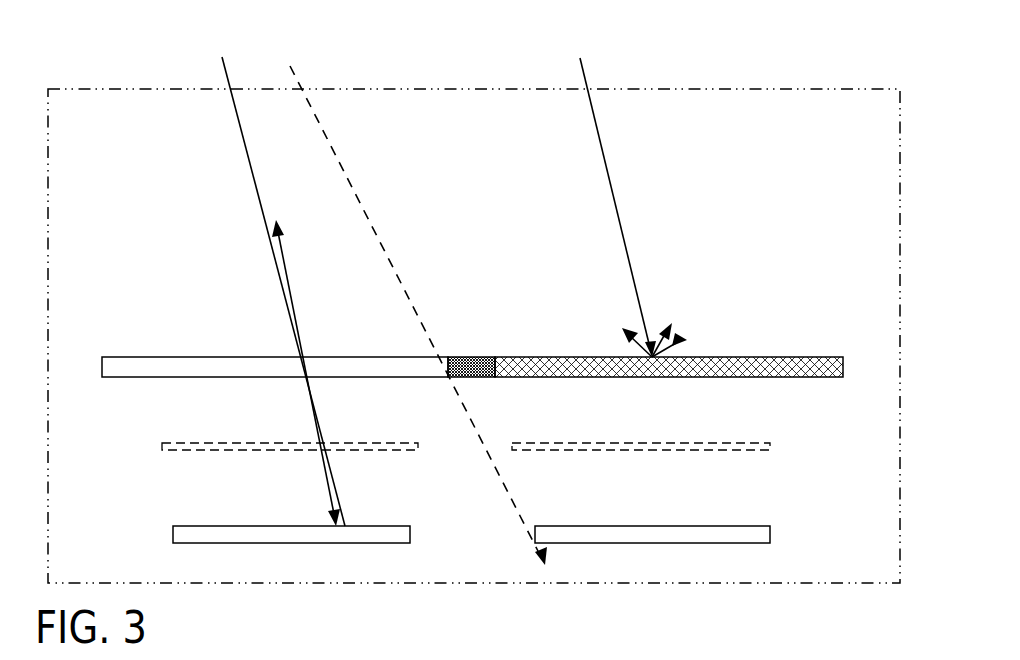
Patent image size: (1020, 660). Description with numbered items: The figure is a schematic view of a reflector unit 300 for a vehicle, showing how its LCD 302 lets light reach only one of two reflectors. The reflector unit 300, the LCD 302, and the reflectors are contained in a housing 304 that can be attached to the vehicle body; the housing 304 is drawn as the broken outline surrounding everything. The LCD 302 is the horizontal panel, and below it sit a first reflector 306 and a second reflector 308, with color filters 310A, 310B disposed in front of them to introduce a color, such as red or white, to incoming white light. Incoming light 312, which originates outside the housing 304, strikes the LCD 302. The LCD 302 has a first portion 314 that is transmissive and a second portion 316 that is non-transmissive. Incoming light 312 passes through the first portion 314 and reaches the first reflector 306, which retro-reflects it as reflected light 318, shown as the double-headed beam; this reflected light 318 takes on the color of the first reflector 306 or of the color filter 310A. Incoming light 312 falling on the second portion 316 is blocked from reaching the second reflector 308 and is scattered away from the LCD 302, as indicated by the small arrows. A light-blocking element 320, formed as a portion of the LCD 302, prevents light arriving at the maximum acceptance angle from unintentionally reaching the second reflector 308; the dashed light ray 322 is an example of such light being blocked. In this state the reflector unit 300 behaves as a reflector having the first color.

The reflector unit 300 is at (117, 55).
The LCD 302 is at (102, 368).
The housing 304 is at (341, 89).
The first reflector 306 is at (306, 543).
The second reflector 308 is at (637, 543).
The color filter 310A is at (162, 445).
The color filter 310B is at (770, 445).
The incoming light 312 is at (275, 280).
The first portion 314 is at (213, 357).
The second portion 316 is at (797, 357).
The reflected light 318 is at (298, 317).
The light-blocking element 320 is at (472, 357).
The light ray 322 is at (386, 235).